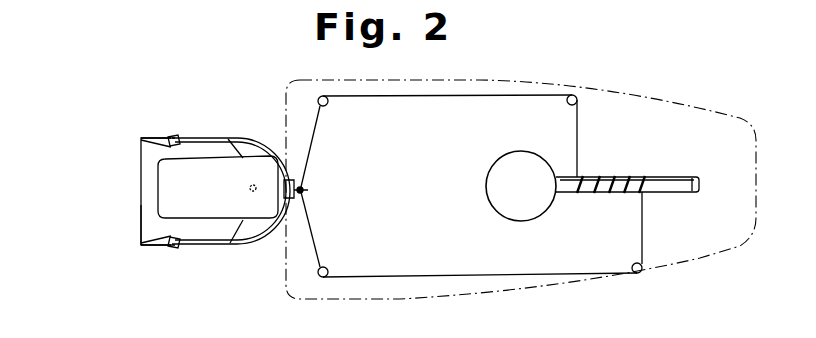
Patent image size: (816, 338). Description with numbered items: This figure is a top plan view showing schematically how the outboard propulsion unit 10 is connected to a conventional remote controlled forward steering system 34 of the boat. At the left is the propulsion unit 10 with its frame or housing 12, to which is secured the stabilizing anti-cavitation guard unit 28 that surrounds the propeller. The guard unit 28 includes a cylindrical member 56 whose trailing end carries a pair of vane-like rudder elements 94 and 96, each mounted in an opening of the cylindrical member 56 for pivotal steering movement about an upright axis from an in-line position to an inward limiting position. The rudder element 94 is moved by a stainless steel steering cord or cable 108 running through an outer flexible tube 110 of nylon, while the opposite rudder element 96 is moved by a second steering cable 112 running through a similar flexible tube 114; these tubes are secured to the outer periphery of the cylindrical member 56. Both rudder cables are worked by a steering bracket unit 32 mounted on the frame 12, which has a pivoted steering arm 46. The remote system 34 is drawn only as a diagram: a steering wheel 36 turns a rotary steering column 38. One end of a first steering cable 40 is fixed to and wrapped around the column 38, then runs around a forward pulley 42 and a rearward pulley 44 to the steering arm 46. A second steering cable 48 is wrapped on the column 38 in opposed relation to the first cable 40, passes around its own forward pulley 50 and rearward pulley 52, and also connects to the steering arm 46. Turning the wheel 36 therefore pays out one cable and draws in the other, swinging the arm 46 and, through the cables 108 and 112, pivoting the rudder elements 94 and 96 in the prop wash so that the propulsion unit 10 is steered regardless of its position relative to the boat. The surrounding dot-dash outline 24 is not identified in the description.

The outboard propulsion unit 10 is at (130, 155).
The frame or housing 12 is at (221, 196).
The enclosure outline 24 is at (692, 103).
The stabilizing anti-cavitation guard unit 28 is at (139, 192).
The steering bracket unit 32 is at (299, 179).
The remote controlled forward steering system 34 is at (526, 93).
The steering wheel 36 is at (505, 163).
The rotary steering column 38 is at (665, 176).
The first steering cable 40 is at (580, 115).
The forward pulley 42 is at (573, 95).
The rearward pulley 44 is at (322, 96).
The pivoted steering arm 46 is at (309, 190).
The second steering cable 48 is at (470, 278).
The forward pulley 50 is at (641, 264).
The rearward pulley 52 is at (325, 279).
The cylindrical member 56 is at (148, 222).
The rudder element 94 is at (163, 135).
The rudder element 96 is at (152, 247).
The steering cord or cable 108 is at (175, 133).
The outer flexible tube 110 is at (272, 136).
The second steering cable 112 is at (176, 247).
The flexible tube 114 is at (228, 245).